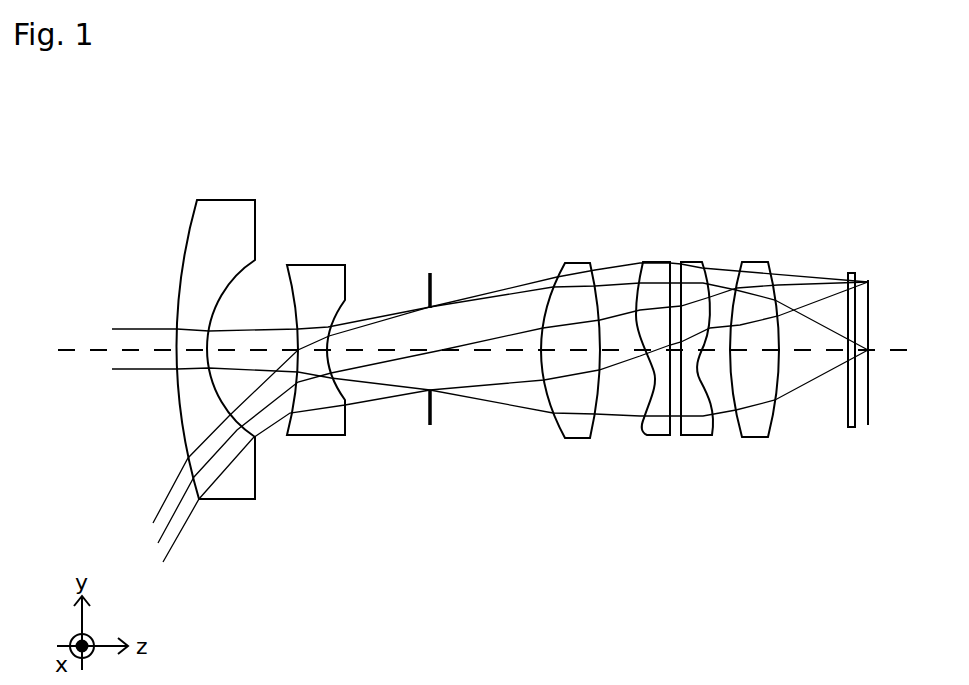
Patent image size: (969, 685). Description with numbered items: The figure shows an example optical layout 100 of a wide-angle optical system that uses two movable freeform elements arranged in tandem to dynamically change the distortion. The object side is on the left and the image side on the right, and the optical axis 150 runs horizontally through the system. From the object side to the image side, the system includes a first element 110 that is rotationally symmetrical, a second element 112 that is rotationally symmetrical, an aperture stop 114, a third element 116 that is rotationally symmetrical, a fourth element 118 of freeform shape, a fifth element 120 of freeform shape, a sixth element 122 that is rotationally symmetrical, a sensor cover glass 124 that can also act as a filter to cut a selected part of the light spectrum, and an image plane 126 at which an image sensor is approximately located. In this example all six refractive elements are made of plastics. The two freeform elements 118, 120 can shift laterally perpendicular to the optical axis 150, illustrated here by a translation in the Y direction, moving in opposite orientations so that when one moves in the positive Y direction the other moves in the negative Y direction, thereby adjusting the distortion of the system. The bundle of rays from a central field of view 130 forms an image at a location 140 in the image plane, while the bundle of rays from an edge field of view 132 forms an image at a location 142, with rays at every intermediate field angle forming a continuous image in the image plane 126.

The optical layout 100 is at (471, 174).
The first element 110 is at (215, 339).
The second element 112 is at (316, 338).
The aperture stop 114 is at (436, 338).
The third element 116 is at (570, 339).
The fourth element 118 is at (655, 338).
The fifth element 120 is at (696, 338).
The sixth element 122 is at (754, 338).
The sensor cover glass 124 is at (849, 339).
The image plane 126 is at (879, 359).
The central field of view 130 is at (490, 349).
The edge field of view 132 is at (496, 412).
The location 140 is at (894, 339).
The location 142 is at (889, 281).
The optical axis 150 is at (482, 341).